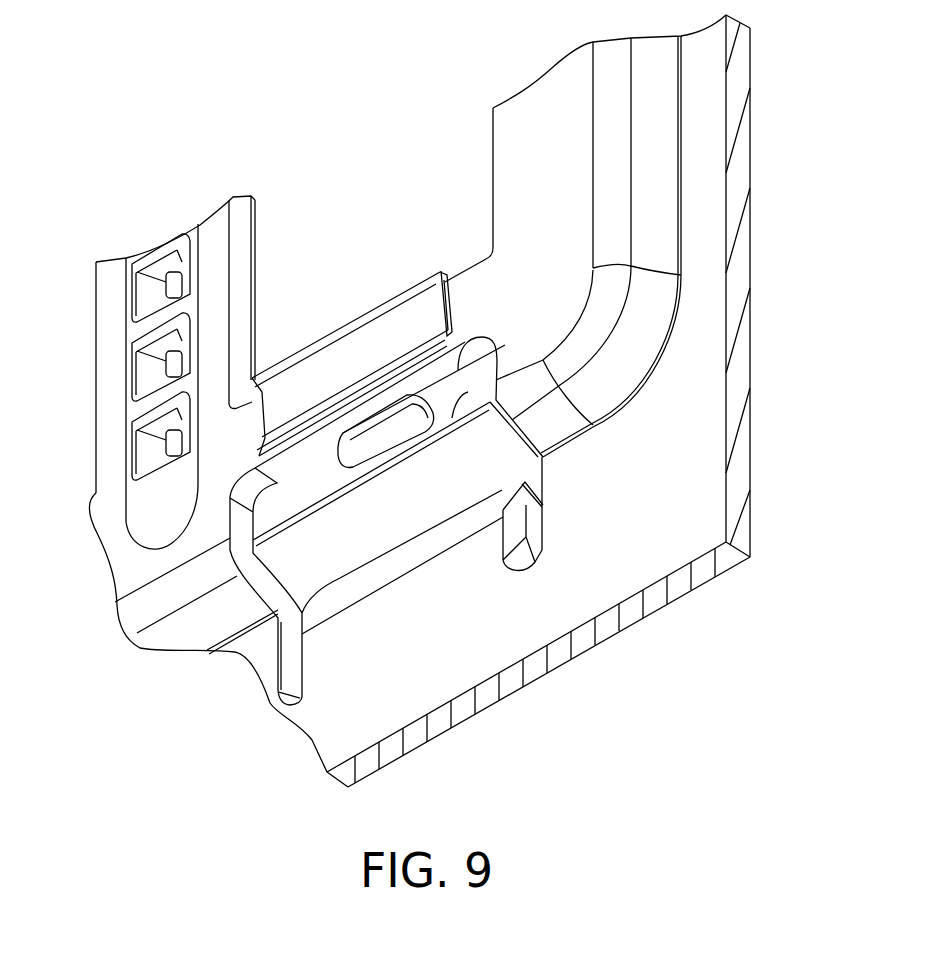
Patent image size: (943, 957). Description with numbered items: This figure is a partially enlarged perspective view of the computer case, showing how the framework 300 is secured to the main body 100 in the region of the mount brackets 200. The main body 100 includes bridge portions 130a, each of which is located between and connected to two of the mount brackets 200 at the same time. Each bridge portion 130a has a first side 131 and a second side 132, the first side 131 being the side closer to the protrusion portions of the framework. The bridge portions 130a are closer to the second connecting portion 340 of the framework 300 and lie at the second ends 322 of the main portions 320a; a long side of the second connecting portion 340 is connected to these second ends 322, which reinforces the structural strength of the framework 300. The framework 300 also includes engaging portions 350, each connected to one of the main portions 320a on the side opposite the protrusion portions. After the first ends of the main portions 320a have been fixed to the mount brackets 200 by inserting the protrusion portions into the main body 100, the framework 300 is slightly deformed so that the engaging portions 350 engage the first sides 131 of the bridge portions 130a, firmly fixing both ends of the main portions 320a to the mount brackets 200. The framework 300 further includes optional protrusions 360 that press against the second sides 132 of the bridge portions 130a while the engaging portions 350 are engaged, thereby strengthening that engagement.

The main body 100 is at (652, 537).
The first side 131 is at (468, 268).
The second side 132 is at (496, 360).
The mount bracket 200 is at (108, 315).
The bridge portion 130a is at (150, 445).
The framework 300 is at (323, 255).
The second end 322 is at (417, 260).
The engaging portion 350 is at (373, 333).
The second connecting portion 340 is at (480, 433).
The main portion 320a is at (450, 455).
The protrusion 360 is at (350, 672).